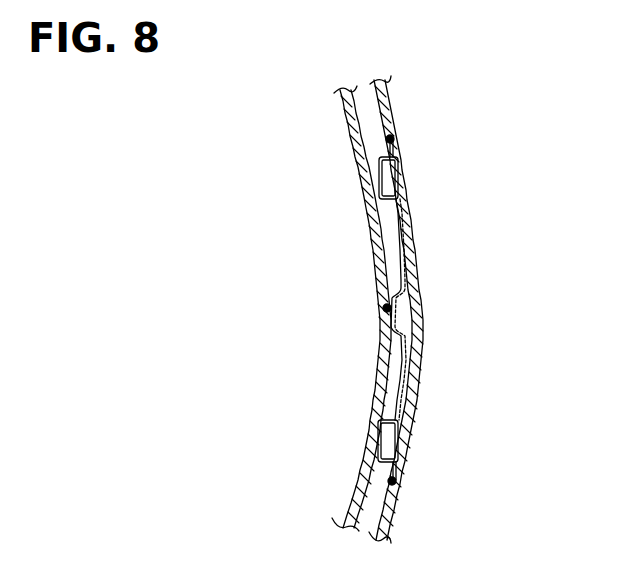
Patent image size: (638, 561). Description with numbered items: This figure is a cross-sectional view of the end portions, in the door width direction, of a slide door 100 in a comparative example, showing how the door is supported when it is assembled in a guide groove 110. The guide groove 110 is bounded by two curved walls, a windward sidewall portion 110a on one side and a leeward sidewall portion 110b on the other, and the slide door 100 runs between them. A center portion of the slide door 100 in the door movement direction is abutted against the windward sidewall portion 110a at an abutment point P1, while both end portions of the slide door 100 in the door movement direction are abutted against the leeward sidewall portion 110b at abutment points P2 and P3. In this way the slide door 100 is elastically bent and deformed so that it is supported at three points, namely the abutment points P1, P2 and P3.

The guide groove 110 is at (232, 100).
The windward sidewall portion 110a is at (353, 130).
The leeward sidewall portion 110b is at (378, 96).
The slide door 100 is at (405, 262).
The abutment point P1 is at (386, 308).
The abutment point P2 is at (393, 138).
The abutment point P3 is at (394, 480).